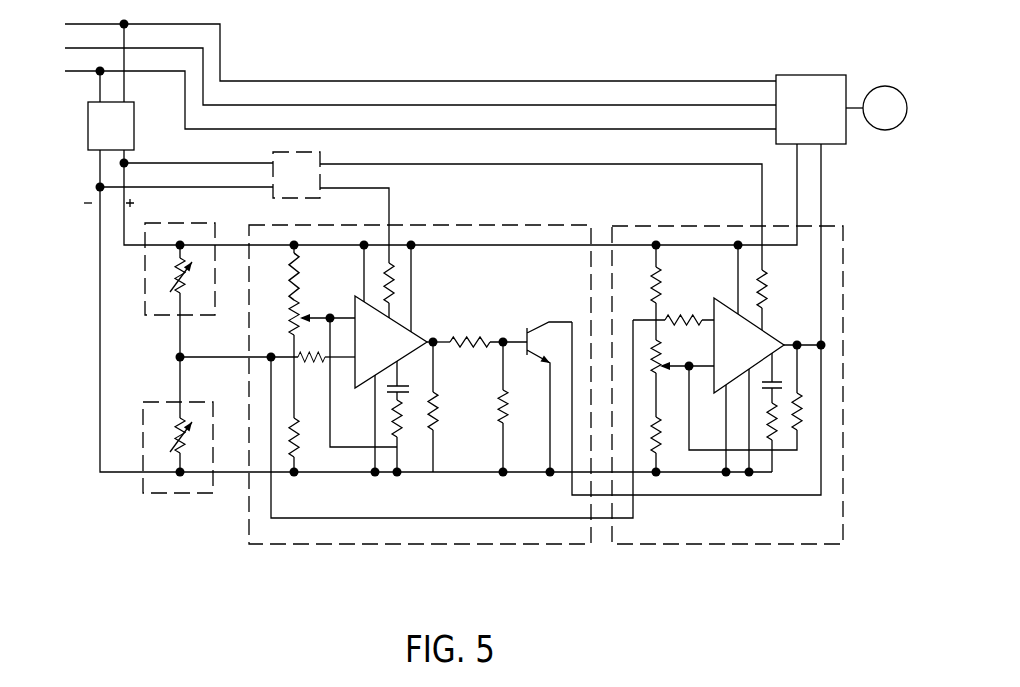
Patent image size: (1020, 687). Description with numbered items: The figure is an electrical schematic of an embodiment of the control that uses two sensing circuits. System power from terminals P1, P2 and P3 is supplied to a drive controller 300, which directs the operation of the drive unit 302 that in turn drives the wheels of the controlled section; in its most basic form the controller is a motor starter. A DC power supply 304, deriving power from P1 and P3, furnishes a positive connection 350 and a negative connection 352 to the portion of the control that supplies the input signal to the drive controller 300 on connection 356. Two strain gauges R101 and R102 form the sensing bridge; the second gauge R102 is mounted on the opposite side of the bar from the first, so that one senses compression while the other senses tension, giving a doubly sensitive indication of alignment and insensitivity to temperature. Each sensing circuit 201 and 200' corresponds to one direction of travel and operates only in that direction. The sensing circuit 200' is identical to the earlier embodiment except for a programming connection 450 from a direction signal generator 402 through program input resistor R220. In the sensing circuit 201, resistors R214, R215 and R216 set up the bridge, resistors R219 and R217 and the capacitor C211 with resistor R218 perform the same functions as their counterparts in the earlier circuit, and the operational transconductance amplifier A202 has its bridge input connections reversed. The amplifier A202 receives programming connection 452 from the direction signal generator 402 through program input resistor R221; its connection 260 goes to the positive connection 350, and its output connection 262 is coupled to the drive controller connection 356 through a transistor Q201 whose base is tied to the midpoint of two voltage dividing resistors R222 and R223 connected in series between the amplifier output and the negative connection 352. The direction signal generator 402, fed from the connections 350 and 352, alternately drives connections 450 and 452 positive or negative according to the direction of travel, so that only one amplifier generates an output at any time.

The power input terminal P1 is at (407, 95).
The power input terminal P2 is at (407, 72).
The power input terminal P3 is at (407, 48).
The DC power supply 304 is at (173, 88).
The negative connection 352 is at (98, 168).
The positive connection 350 is at (124, 172).
The direction signal generator 402 is at (210, 163).
The programming connection 450 is at (475, 165).
The programming connection 452 is at (390, 208).
The drive controller 300 is at (804, 76).
The drive unit 302 is at (881, 144).
The drive controller connection 356 is at (823, 212).
The connection to positive DC connection 260 is at (413, 292).
The output connection 262 is at (433, 338).
The sensing circuit 201 is at (418, 398).
The sensing circuit 200' is at (726, 399).
The strain gauge R101 is at (175, 292).
The second strain gauge R102 is at (175, 461).
The resistor R214 is at (318, 272).
The resistor R215 is at (304, 359).
The resistor R216 is at (315, 445).
The resistor R217 is at (326, 369).
The resistor R218 is at (400, 432).
The resistor R219 is at (455, 407).
The program input resistor R220 is at (785, 300).
The program input resistor R221 is at (397, 281).
The voltage dividing resistor R222 is at (488, 332).
The voltage dividing resistor R223 is at (526, 407).
The operational transconductance amplifier A202 is at (400, 351).
The capacitor C211 is at (416, 380).
The transistor Q201 is at (549, 387).